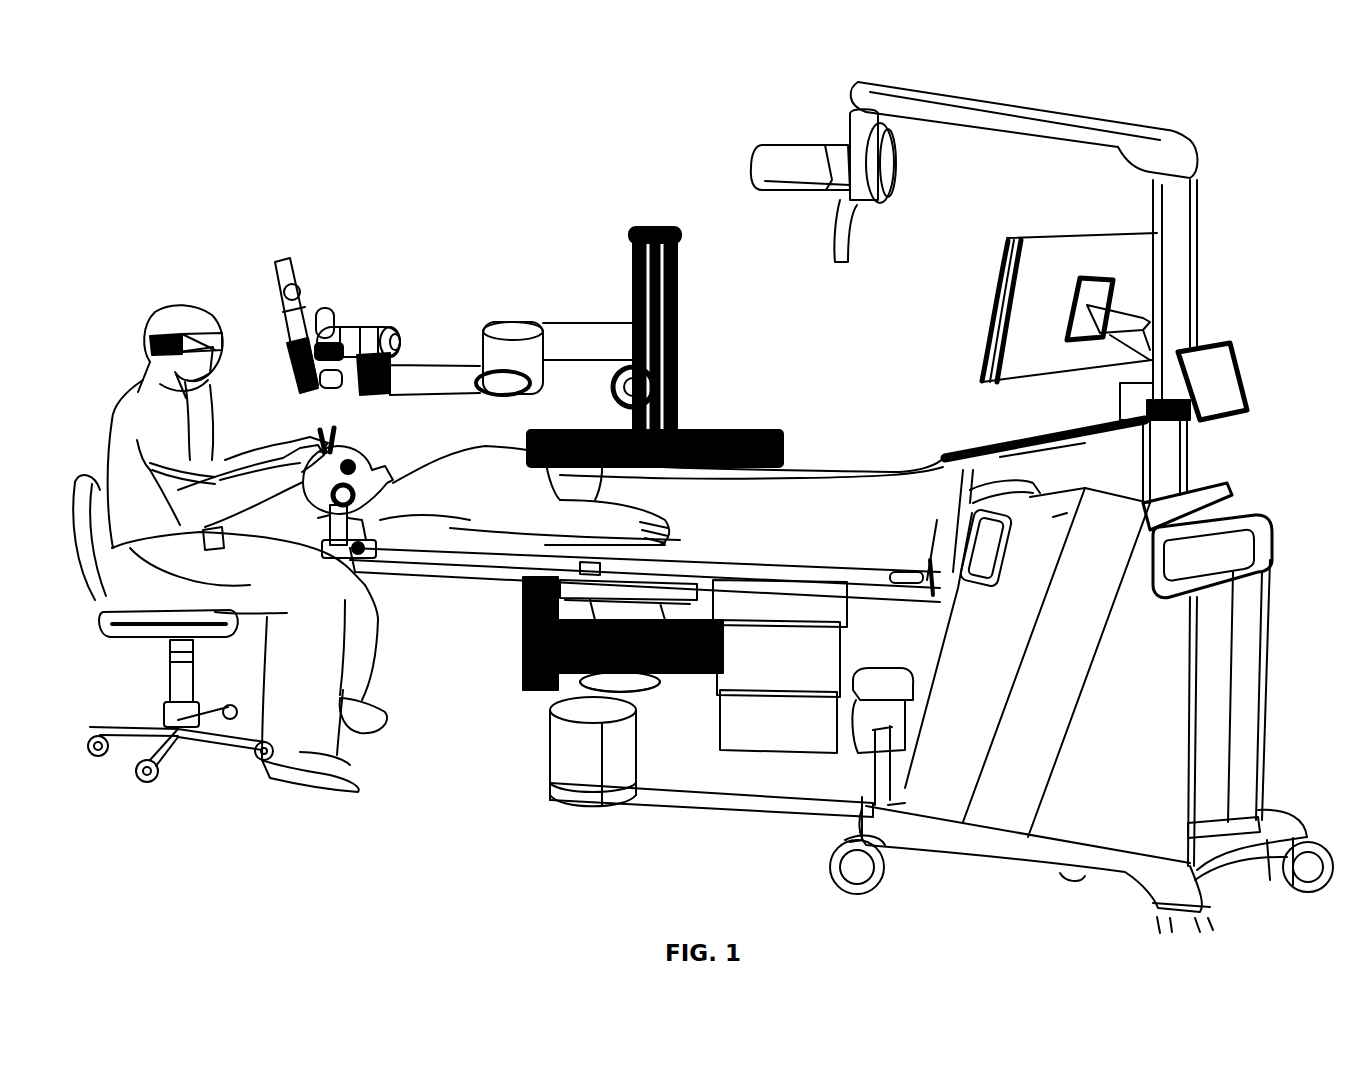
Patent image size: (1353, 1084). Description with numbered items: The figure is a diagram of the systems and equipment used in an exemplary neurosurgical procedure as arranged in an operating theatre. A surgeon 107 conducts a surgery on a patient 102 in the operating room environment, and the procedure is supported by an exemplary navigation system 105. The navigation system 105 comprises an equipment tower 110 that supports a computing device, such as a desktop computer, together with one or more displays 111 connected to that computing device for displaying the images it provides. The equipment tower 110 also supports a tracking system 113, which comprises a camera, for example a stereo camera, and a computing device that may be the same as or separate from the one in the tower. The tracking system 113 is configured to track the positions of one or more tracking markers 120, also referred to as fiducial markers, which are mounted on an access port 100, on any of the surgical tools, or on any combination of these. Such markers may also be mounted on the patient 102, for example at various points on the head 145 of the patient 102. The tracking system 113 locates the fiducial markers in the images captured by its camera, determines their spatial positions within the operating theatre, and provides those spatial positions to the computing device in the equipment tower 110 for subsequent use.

The access port 100 is at (310, 442).
The patient 102 is at (405, 492).
The navigation system 105 is at (1134, 80).
The surgeon 107 is at (148, 320).
The equipment tower 110 is at (1207, 470).
The display 111 is at (978, 335).
The tracking system 113 is at (740, 170).
The tracking marker 120 is at (336, 428).
The head 145 is at (352, 463).